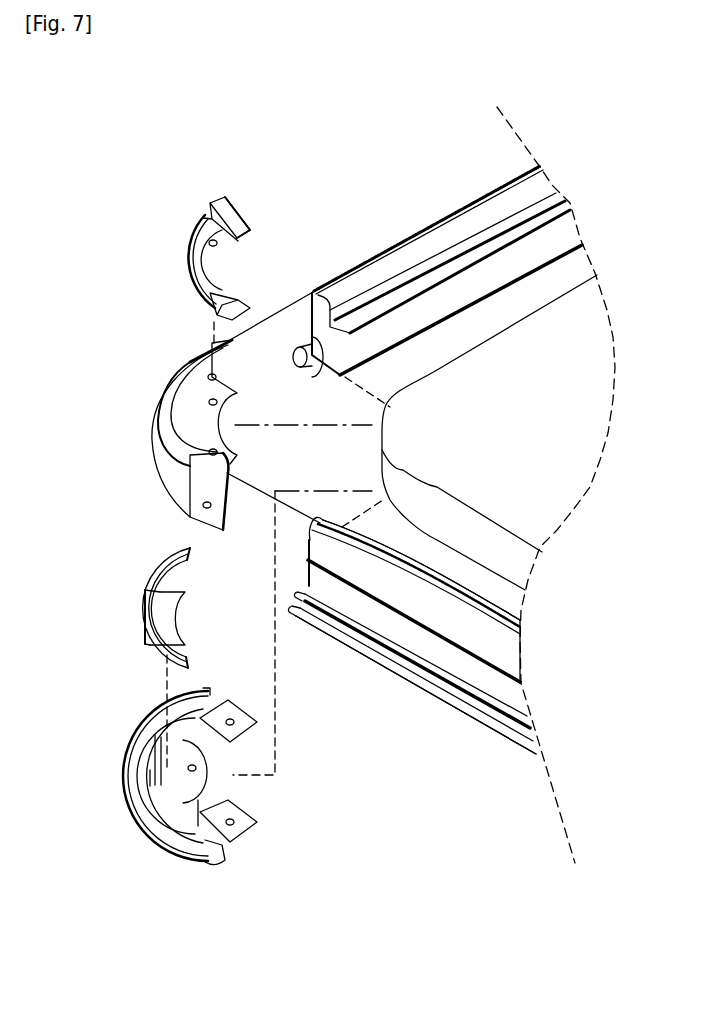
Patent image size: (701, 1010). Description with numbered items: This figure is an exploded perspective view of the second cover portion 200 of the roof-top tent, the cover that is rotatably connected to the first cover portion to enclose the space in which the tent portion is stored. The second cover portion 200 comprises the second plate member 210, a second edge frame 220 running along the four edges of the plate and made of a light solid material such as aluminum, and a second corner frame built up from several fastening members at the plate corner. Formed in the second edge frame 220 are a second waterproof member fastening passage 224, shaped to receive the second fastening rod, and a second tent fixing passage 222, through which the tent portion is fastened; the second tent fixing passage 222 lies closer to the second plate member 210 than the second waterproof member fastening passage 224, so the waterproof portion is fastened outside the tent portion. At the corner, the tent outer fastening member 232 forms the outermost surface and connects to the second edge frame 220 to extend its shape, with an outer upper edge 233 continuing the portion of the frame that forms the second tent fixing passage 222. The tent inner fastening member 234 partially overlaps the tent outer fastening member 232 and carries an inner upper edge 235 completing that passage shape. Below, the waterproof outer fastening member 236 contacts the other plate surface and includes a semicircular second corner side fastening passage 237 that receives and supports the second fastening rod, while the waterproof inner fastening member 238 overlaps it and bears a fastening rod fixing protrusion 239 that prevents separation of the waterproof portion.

The second cover portion 200 is at (408, 80).
The second plate member 210 is at (392, 457).
The second edge frame 220 is at (318, 360).
The second tent fixing passage 222 is at (327, 287).
The second waterproof member fastening passage 224 is at (295, 368).
The tent outer fastening member 232 is at (157, 451).
The outer upper edge 233 is at (160, 389).
The tent inner fastening member 234 is at (206, 268).
The inner upper edge 235 is at (182, 241).
The waterproof outer fastening member 236 is at (128, 815).
The second corner side fastening passage 237 is at (127, 762).
The waterproof inner fastening member 238 is at (144, 595).
The fastening rod fixing protrusion 239 is at (144, 630).